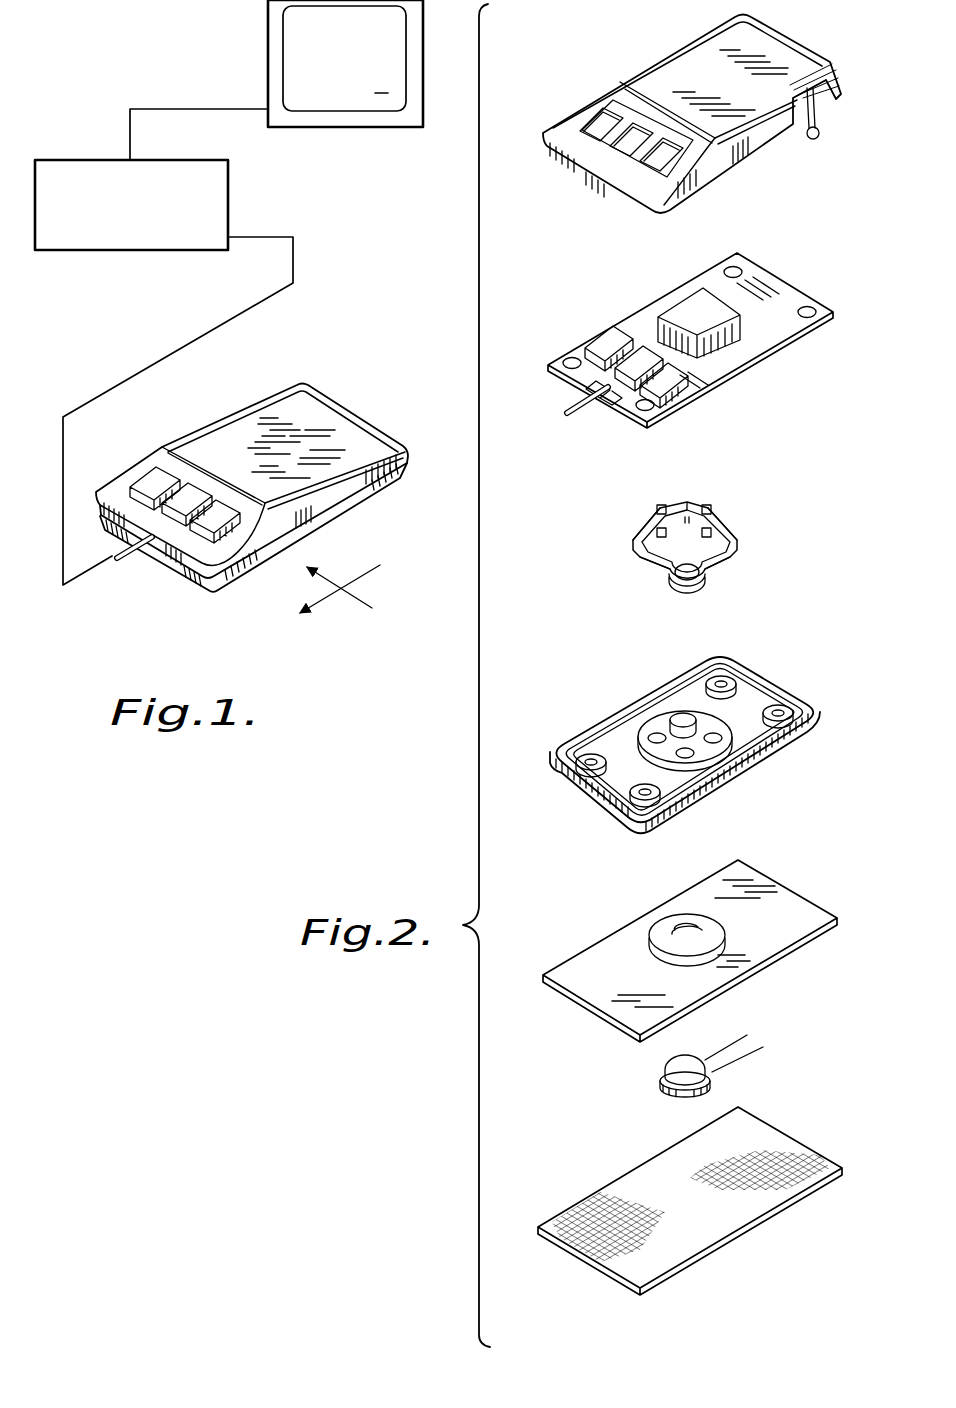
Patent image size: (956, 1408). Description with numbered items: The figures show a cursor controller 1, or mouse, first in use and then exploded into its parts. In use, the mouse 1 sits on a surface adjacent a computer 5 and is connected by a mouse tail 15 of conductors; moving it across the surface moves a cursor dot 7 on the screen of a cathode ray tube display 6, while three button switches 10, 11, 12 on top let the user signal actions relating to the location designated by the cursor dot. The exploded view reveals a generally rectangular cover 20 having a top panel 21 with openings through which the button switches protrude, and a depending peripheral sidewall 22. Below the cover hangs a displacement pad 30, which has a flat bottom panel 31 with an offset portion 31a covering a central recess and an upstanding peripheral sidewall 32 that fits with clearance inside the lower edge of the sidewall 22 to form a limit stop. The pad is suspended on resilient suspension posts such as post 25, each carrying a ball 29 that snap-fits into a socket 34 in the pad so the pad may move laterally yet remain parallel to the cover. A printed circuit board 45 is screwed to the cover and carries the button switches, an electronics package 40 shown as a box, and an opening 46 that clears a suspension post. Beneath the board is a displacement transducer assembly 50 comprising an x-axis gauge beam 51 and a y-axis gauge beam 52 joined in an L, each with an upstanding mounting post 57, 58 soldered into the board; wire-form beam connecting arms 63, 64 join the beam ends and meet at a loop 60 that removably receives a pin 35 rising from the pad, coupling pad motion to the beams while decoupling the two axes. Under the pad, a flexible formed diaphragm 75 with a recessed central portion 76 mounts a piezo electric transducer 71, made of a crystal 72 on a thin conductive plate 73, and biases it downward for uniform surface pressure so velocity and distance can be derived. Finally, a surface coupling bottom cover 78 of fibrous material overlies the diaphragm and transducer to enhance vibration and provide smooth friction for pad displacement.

In FIG. 1, the cursor controller 1 is at (333, 377).
In FIG. 1, the computer 5 is at (229, 197).
In FIG. 1, the cathode ray tube display 6 is at (318, 83).
In FIG. 1, the cursor dot 7 is at (381, 95).
In FIG. 1, the button switch 10 is at (147, 473).
In FIG. 1, the button switch 11 is at (203, 483).
In FIG. 1, the button switch 12 is at (203, 530).
In FIG. 1, the mouse tail 15 is at (127, 560).
In FIG. 2, the mouse tail 15 is at (588, 410).
In FIG. 1, the cover 20 is at (263, 468).
In FIG. 2, the cover 20 is at (721, 108).
In FIG. 1, the top panel 21 is at (267, 407).
In FIG. 2, the top panel 21 is at (670, 47).
In FIG. 1, the depending peripheral sidewall 22 is at (353, 487).
In FIG. 2, the depending peripheral sidewall 22 is at (767, 153).
In FIG. 2, the suspension post 25 is at (813, 110).
In FIG. 2, the ball 29 is at (817, 138).
In FIG. 1, the displacement pad 30 is at (237, 580).
In FIG. 2, the displacement pad 30 is at (706, 723).
In FIG. 2, the bottom panel 31 is at (699, 717).
In FIG. 2, the offset portion of the bottom panel 31a is at (652, 723).
In FIG. 2, the upstanding peripheral sidewall 32 is at (717, 787).
In FIG. 2, the socket 34 is at (722, 682).
In FIG. 2, the pin 35 is at (683, 727).
In FIG. 2, the electronics package 40 is at (683, 305).
In FIG. 2, the printed circuit board 45 is at (689, 352).
In FIG. 2, the opening 46 is at (572, 355).
In FIG. 2, the displacement transducer assembly 50 is at (706, 537).
In FIG. 2, the x-axis gauge beam 51 is at (647, 525).
In FIG. 2, the y-axis gauge beam 52 is at (733, 537).
In FIG. 2, the mounting post 57 is at (663, 505).
In FIG. 2, the mounting post 58 is at (707, 505).
In FIG. 2, the loop 60 is at (677, 587).
In FIG. 2, the beam connecting arm 63 is at (660, 562).
In FIG. 2, the beam connecting arm 64 is at (713, 565).
In FIG. 2, the piezo electric transducer 71 is at (693, 1063).
In FIG. 2, the crystal 72 is at (692, 1057).
In FIG. 2, the thin conductive plate 73 is at (708, 1092).
In FIG. 2, the flexible formed diaphragm 75 is at (704, 945).
In FIG. 2, the recessed central portion 76 is at (670, 933).
In FIG. 2, the surface coupling bottom cover 78 is at (747, 1240).